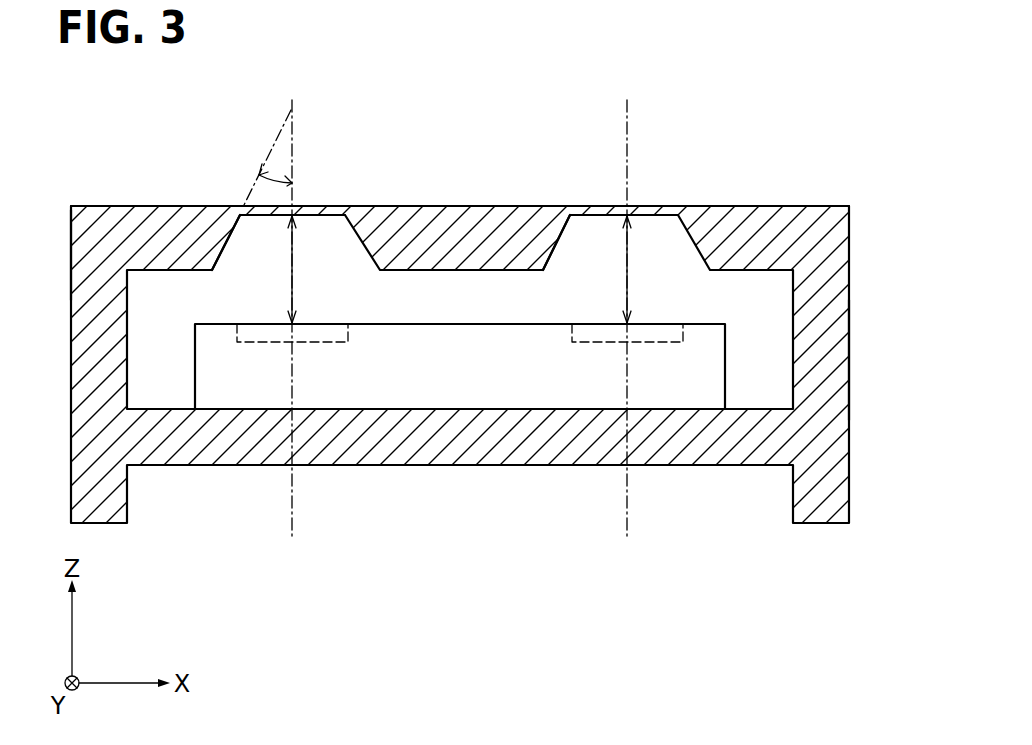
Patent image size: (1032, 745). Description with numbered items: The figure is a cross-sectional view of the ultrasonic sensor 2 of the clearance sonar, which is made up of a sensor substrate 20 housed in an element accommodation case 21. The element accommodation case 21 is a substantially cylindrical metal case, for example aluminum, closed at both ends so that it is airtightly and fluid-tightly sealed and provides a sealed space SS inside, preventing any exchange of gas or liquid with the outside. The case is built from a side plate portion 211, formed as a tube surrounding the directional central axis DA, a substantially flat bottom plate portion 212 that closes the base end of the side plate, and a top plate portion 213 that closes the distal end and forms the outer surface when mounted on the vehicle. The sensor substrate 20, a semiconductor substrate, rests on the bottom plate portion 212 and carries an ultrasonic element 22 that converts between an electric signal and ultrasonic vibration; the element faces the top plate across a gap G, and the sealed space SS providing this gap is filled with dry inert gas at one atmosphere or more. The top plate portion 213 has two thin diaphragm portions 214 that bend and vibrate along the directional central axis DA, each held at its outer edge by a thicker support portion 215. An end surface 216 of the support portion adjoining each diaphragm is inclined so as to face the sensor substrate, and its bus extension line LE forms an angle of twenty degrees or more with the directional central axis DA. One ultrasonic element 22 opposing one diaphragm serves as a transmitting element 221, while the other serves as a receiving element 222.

The ultrasonic sensor 2 is at (813, 114).
The sensor substrate 20 is at (362, 387).
The element accommodation case 21 is at (849, 206).
The side plate portion 211 is at (849, 358).
The bottom plate portion 212 is at (460, 466).
The top plate portion 213 is at (71, 242).
The diaphragm portion 214 is at (333, 207).
The support portion 215 is at (120, 213).
The end surface 216 is at (218, 256).
The ultrasonic element 22 is at (686, 311).
The transmitting element 221 is at (658, 324).
The receiving element 222 is at (320, 324).
The directional central axis DA is at (292, 522).
The gap G is at (291, 291).
The bus extension line LE is at (281, 130).
The sealed space SS is at (777, 309).